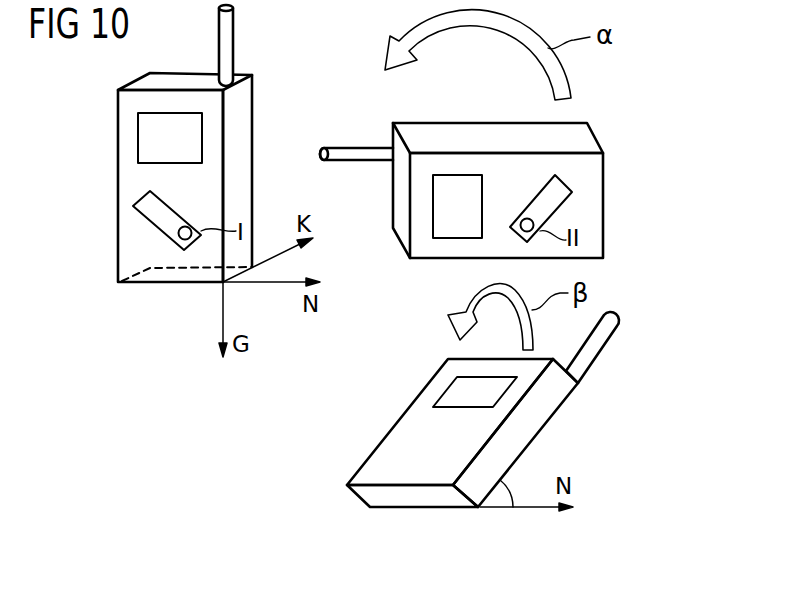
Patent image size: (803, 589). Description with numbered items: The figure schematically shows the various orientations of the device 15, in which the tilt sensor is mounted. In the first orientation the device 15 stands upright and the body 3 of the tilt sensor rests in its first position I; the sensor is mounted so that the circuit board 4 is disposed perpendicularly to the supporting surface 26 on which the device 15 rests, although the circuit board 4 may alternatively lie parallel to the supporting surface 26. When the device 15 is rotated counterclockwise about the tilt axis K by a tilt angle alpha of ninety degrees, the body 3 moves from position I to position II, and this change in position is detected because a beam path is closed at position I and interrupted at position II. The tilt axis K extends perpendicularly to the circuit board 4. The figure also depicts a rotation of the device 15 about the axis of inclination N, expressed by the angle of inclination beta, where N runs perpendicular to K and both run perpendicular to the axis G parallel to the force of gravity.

The device 15 is at (297, 58).
The body 3 is at (189, 226).
The circuit board 4 is at (155, 228).
The supporting surface 26 is at (172, 273).